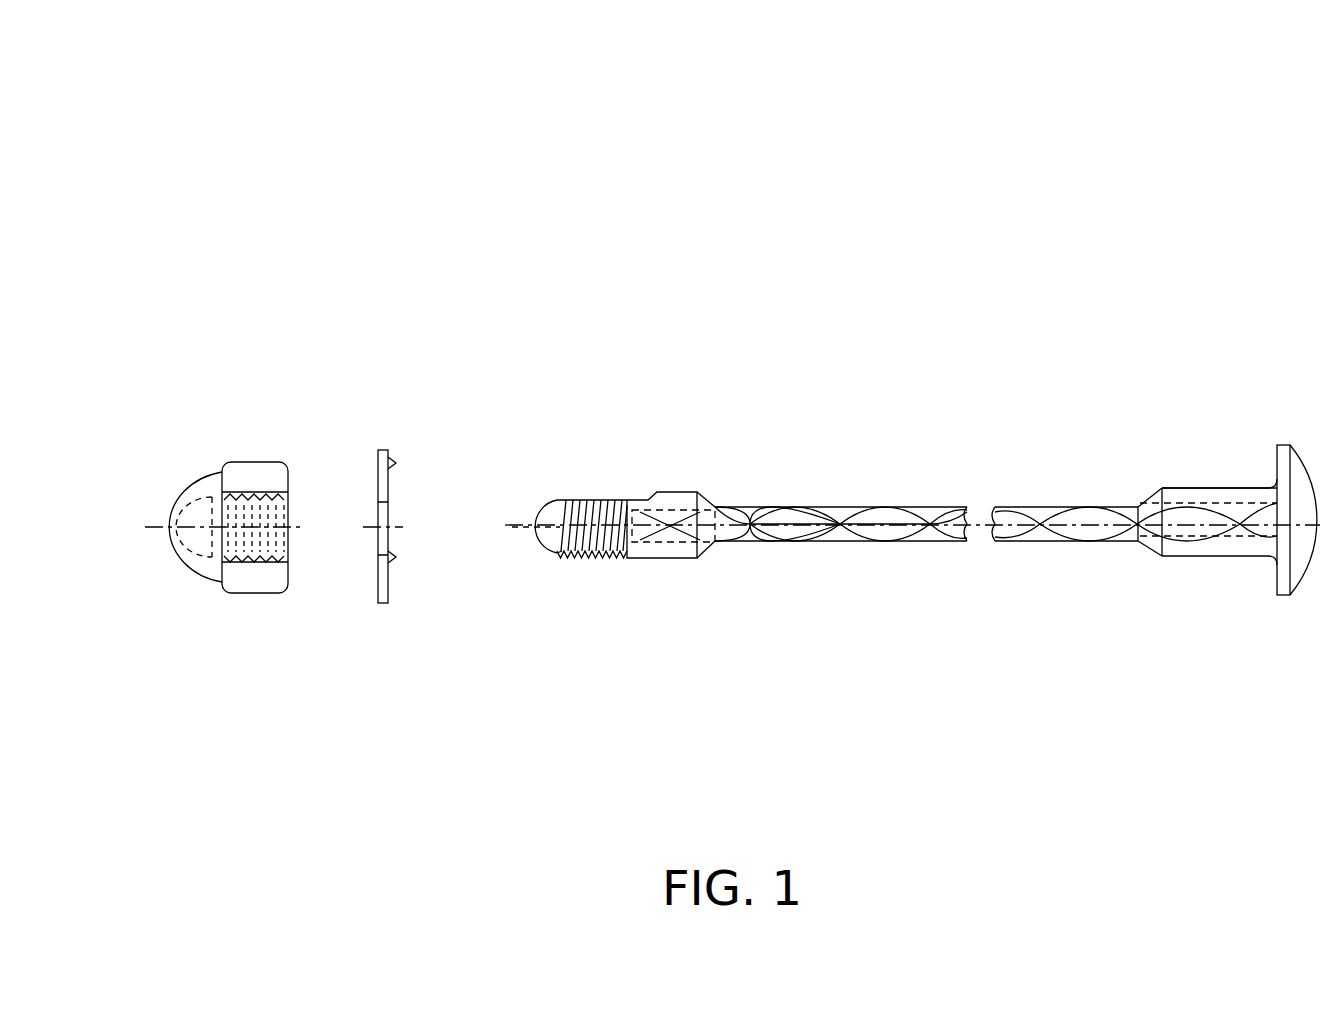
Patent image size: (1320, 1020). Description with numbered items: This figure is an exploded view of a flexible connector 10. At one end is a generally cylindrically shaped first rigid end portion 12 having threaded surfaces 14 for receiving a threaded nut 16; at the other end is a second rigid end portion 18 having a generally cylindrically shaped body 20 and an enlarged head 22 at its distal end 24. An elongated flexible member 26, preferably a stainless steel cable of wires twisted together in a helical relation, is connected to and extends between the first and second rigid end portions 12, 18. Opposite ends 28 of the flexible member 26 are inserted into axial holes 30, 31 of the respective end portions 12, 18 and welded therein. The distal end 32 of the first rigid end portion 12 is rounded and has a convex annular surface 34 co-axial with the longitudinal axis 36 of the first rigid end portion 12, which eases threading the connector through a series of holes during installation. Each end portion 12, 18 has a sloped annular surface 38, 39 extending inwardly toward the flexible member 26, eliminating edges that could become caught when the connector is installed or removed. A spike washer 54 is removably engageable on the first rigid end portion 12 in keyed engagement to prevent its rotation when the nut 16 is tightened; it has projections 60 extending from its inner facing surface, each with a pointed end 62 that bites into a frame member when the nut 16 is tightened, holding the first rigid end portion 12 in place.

The flexible connector 10 is at (790, 200).
The first rigid end portion 12 is at (668, 605).
The threaded surfaces 14 is at (602, 600).
The threaded nut 16 is at (248, 635).
The second rigid end portion 18 is at (1180, 590).
The body 20 is at (1228, 443).
The enlarged head 22 is at (1302, 432).
The distal end 24 is at (1247, 618).
The elongated flexible member 26 is at (1005, 458).
The ends of the flexible member 28 is at (673, 463).
The axial hole 30 is at (717, 458).
The axial hole 31 is at (1213, 452).
The distal end 32 is at (550, 590).
The convex annular surface 34 is at (515, 457).
The longitudinal axis 36 is at (503, 600).
The sloped annular surface 38 is at (753, 580).
The sloped annular surface 39 is at (1113, 580).
The spike washer 54 is at (360, 420).
The projections 60 is at (417, 410).
The pointed end 62 is at (407, 610).